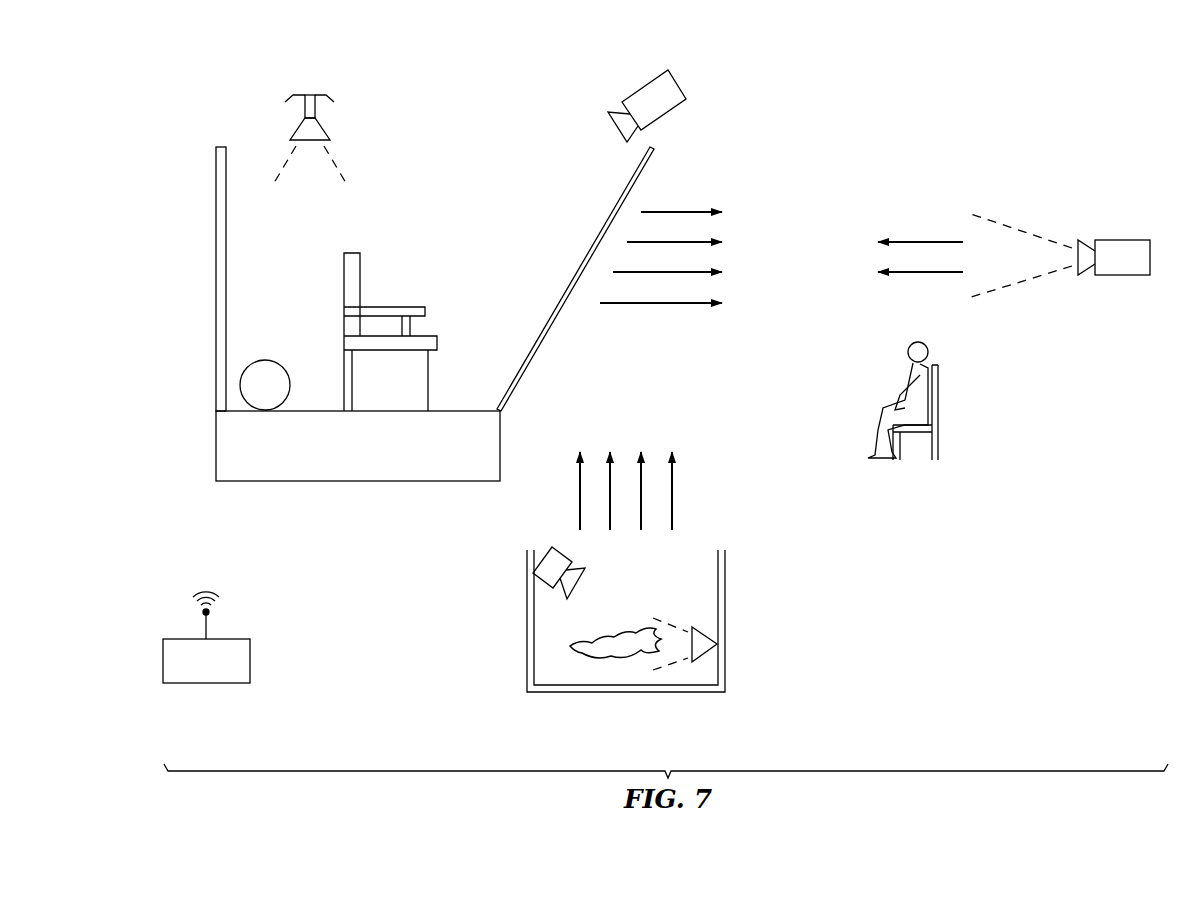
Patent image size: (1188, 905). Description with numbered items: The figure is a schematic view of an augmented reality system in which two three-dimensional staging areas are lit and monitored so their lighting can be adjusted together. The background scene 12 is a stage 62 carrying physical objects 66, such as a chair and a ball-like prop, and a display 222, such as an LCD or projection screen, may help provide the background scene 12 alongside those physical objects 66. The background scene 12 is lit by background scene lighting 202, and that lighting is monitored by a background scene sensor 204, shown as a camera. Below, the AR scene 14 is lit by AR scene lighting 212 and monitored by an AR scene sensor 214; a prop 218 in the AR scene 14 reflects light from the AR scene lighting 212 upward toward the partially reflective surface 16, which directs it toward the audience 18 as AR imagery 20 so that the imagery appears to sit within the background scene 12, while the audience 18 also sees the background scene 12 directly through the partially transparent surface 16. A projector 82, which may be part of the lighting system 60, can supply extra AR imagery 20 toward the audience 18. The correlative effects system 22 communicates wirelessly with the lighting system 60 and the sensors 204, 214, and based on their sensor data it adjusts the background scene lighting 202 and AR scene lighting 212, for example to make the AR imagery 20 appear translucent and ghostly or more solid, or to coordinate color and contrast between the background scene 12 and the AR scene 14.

The background scene 12 is at (259, 504).
The AR scene 14 is at (627, 600).
The partially reflective surface 16 is at (574, 278).
The audience 18 is at (924, 344).
The AR imagery 20 is at (667, 212).
The correlative effects system 22 is at (218, 675).
The lighting system 60 is at (292, 134).
The stage 62 is at (461, 226).
The physical object 66 is at (383, 308).
The projector 82 is at (1126, 240).
The background scene lighting 202 is at (323, 128).
The background scene sensor 204 is at (651, 83).
The AR scene lighting 212 is at (710, 652).
The AR scene sensor 214 is at (575, 569).
The prop 218 is at (613, 632).
The display 222 is at (216, 276).